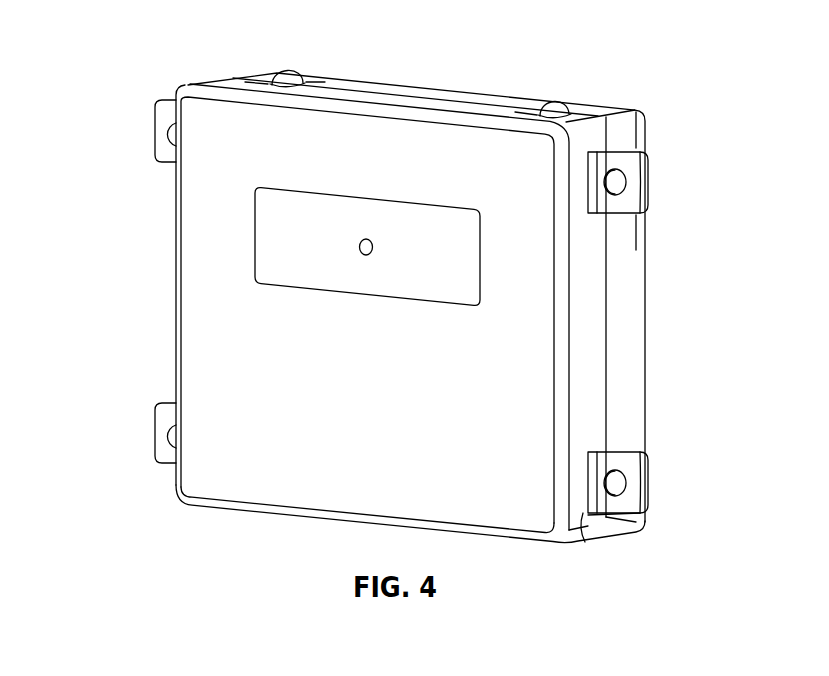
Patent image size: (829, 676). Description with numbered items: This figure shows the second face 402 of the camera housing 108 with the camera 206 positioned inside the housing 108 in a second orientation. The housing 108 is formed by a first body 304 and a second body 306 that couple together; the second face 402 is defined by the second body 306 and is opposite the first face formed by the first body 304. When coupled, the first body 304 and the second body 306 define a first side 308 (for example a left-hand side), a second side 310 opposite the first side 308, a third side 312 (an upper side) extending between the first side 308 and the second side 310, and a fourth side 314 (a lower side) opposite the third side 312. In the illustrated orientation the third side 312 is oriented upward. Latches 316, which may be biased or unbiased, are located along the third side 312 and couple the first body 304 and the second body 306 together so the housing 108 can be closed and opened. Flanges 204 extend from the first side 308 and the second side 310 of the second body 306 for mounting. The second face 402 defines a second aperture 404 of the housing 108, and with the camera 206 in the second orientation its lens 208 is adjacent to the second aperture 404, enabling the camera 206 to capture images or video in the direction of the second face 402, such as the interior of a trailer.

The housing 108 is at (165, 65).
The second side 310 is at (217, 67).
The third side 312 is at (437, 93).
The latches 316 is at (295, 76).
The flanges 204 is at (170, 128).
The camera 206 is at (265, 218).
The second aperture 404 is at (252, 250).
The lens 208 is at (362, 252).
The second face 402 is at (192, 380).
The first side 308 is at (623, 315).
The fourth side 314 is at (221, 511).
The second body 306 is at (582, 515).
The first body 304 is at (618, 527).